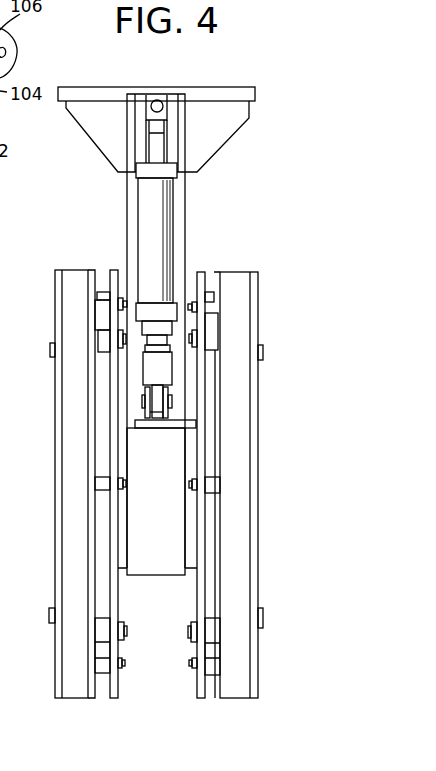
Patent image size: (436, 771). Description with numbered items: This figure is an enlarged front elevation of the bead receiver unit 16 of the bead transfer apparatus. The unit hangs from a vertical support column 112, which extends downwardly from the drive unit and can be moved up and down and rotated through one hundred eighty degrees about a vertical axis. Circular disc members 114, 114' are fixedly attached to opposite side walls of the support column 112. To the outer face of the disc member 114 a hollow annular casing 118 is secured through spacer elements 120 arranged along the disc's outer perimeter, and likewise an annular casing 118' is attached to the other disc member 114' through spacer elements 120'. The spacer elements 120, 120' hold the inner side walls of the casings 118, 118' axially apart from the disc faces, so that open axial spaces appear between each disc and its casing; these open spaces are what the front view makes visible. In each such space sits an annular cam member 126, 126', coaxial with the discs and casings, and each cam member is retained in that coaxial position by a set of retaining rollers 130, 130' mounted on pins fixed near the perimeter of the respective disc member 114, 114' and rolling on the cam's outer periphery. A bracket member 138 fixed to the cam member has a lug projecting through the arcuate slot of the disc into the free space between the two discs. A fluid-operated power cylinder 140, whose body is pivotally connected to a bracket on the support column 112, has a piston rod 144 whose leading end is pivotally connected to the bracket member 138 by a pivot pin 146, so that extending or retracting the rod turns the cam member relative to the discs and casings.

The bead receiver unit 16 is at (238, 211).
The vertical support column 112 is at (186, 192).
The fluid-operated power cylinder 140 is at (135, 265).
The piston rod 144 is at (172, 371).
The pivot pin 146 is at (136, 407).
The bracket member 138 is at (171, 430).
The annular casing 118 is at (263, 485).
The annular casing 118' is at (48, 484).
The circular disc member 114 is at (209, 459).
The circular disc member 114' is at (110, 459).
The spacer elements 120 is at (241, 486).
The spacer elements 120' is at (73, 485).
The retaining rollers 130 is at (248, 331).
The retaining rollers 130' is at (66, 326).
The annular cam member 126 is at (182, 485).
The annular cam member 126' is at (128, 484).